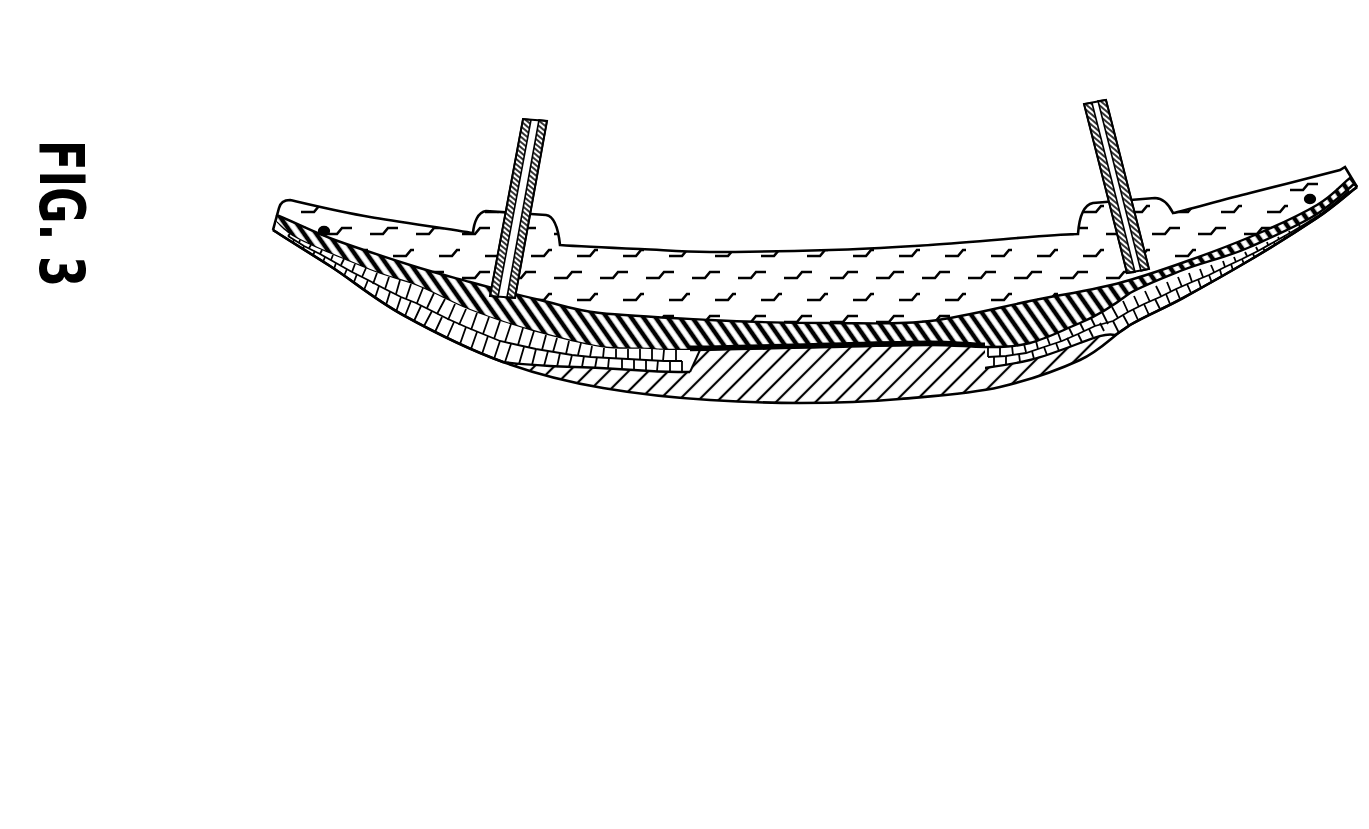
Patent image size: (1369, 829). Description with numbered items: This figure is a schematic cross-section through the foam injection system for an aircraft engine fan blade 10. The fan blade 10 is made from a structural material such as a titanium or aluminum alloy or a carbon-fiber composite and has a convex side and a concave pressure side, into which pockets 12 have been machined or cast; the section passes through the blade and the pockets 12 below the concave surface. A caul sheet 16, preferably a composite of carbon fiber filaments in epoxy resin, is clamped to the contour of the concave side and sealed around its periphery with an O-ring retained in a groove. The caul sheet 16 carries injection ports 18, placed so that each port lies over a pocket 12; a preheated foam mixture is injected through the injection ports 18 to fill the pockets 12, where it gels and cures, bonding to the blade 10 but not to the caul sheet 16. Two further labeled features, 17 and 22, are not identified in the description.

The fan blade 10 is at (1194, 148).
The pockets 12 is at (467, 347).
The caul sheet 16 is at (297, 212).
The reinforcing layer 17 is at (1082, 340).
The injection ports 18 is at (557, 227).
The mounting post 22 is at (545, 152).